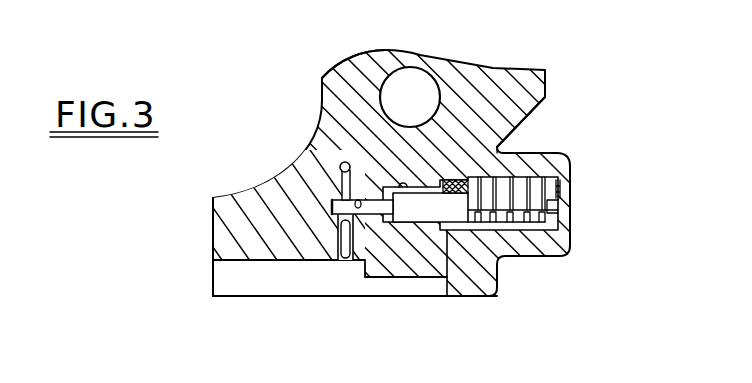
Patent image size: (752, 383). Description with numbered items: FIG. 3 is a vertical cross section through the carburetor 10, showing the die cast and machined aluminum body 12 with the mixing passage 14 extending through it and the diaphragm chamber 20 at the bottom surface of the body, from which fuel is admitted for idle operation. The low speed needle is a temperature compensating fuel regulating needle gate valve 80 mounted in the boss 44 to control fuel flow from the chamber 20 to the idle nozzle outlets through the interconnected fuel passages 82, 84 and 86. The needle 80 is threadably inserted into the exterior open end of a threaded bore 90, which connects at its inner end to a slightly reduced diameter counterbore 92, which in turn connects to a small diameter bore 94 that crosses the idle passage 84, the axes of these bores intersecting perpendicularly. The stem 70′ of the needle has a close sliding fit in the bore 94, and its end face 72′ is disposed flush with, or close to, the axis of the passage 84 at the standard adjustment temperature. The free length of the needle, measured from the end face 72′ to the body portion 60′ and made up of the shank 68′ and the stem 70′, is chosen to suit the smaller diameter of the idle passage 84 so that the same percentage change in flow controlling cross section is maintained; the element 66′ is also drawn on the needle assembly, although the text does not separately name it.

The carburetor 10 is at (497, 31).
The body 12 is at (548, 80).
The mixing passage 14 is at (322, 103).
The diaphragm chamber 20 is at (323, 285).
The boss 44 is at (558, 148).
The body portion 60′ is at (530, 256).
The plunger head 66′ is at (553, 202).
The shank 68′ is at (447, 296).
The stem 70′ is at (377, 223).
The end face 72′ is at (389, 203).
The temperature compensating fuel regulating needle gate valve 80 is at (560, 217).
The fuel passage 82 is at (343, 260).
The idle passage 84 is at (342, 178).
The fuel passage 86 is at (342, 164).
The threaded bore 90 is at (456, 180).
The counterbore 92 is at (403, 186).
The small diameter bore 94 is at (359, 200).